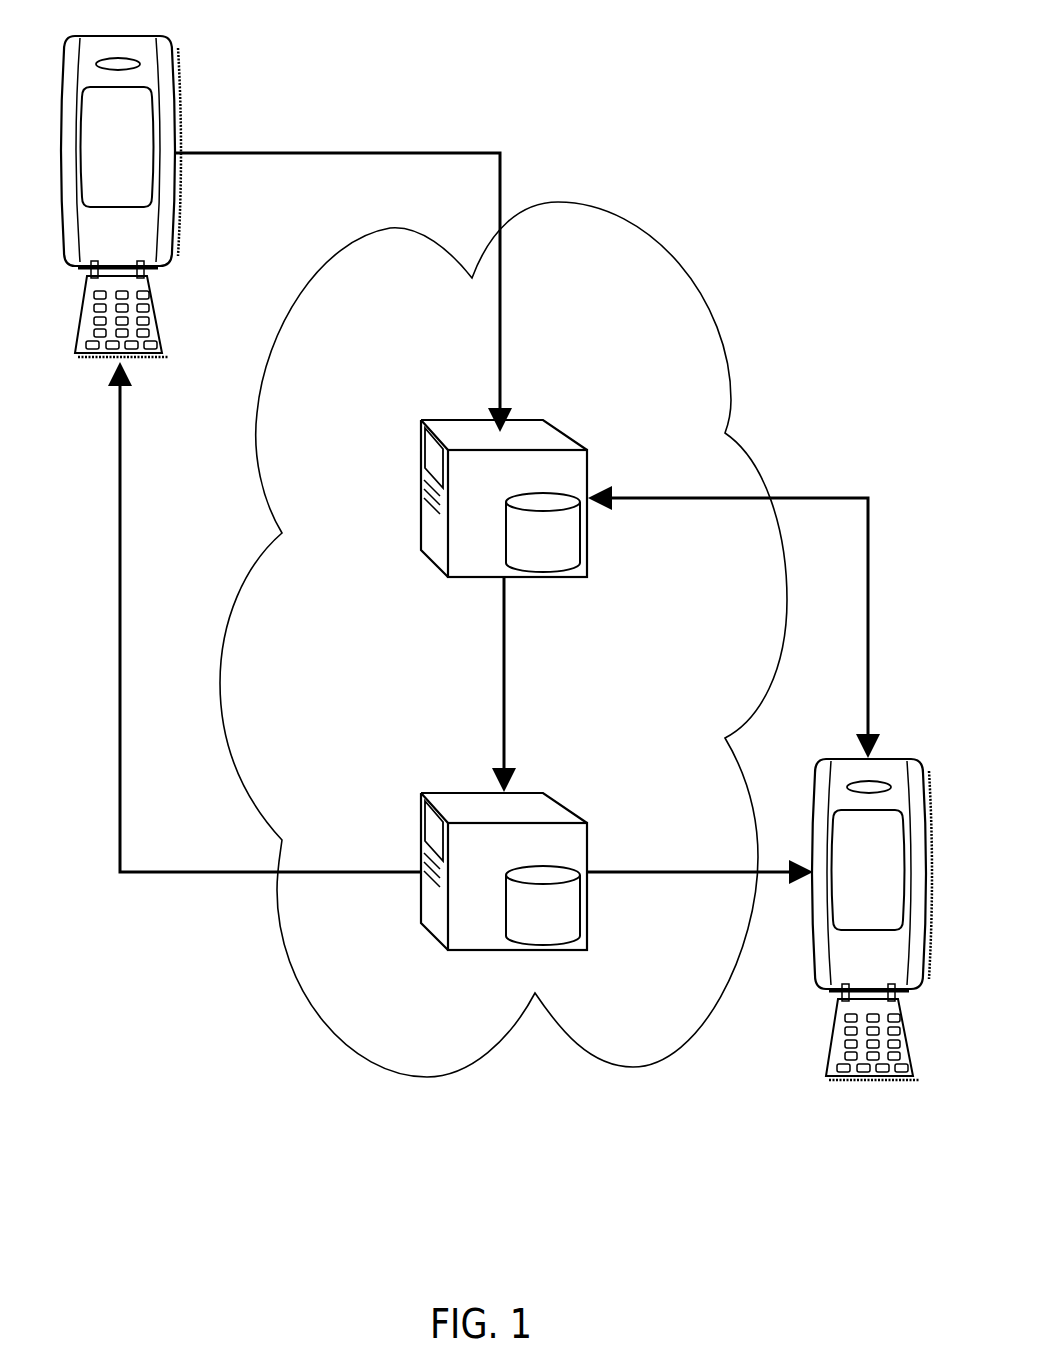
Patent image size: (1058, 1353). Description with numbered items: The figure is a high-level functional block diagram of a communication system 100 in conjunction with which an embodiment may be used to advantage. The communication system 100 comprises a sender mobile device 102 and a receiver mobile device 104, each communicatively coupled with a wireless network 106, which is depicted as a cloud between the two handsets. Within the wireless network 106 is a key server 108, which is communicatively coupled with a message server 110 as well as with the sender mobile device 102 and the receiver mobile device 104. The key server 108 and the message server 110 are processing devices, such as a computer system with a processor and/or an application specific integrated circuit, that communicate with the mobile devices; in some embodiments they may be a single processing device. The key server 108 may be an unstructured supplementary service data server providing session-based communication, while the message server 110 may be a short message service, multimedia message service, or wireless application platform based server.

The communication system 100 is at (803, 218).
The sender mobile device 102 is at (177, 62).
The receiver mobile device 104 is at (812, 953).
The wireless network 106 is at (582, 202).
The key server 108 is at (543, 420).
The message server 110 is at (543, 793).